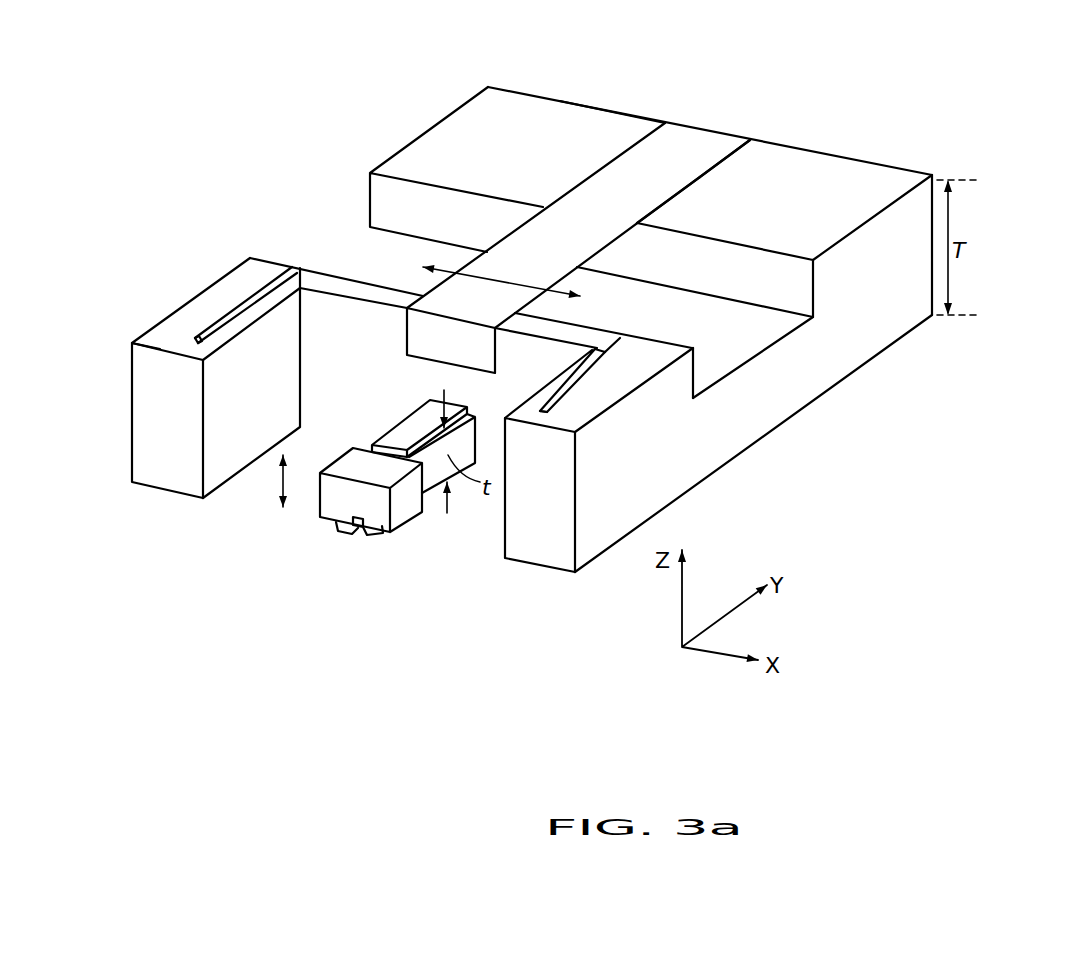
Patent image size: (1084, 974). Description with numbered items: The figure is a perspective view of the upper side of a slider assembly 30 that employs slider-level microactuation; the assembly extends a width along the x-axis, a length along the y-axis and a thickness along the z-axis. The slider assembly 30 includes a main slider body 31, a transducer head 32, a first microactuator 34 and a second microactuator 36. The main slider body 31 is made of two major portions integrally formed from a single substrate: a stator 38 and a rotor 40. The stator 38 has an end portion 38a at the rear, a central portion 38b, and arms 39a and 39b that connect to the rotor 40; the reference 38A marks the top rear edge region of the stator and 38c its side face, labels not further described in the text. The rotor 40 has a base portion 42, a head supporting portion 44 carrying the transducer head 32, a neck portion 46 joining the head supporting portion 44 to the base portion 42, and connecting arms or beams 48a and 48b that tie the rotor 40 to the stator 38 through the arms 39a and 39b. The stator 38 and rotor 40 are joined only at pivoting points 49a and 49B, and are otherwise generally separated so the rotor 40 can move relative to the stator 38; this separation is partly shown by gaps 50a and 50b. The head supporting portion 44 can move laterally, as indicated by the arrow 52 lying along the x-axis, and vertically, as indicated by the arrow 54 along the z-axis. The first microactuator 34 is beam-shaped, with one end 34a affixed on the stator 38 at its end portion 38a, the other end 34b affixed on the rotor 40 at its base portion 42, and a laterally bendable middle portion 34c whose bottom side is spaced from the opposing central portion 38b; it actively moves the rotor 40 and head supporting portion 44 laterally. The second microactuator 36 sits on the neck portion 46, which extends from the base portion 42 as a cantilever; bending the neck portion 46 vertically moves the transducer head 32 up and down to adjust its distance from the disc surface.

The slider assembly 30 is at (606, 76).
The main slider body 31 is at (549, 86).
The transducer head 32 is at (355, 528).
The first microactuator 34 is at (560, 228).
The end of first microactuator 34a is at (690, 133).
The end of first microactuator 34b is at (333, 282).
The middle portion of first microactuator 34c is at (595, 228).
The second microactuator 36 is at (397, 423).
The stator 38 is at (502, 103).
The top rear edge 38A is at (607, 113).
The end portion of stator 38a is at (767, 152).
The central portion of stator 38b is at (613, 295).
The side face 38c is at (667, 480).
The arm of stator 39a is at (173, 330).
The arm of stator 39b is at (670, 353).
The rotor 40 is at (300, 272).
The base portion of rotor 42 is at (343, 355).
The head supporting portion 44 is at (333, 492).
The neck portion 46 is at (467, 436).
The connecting arm 48a is at (250, 318).
The connecting arm 48b is at (550, 385).
The pivoting point 49a is at (203, 339).
The pivoting point 49B is at (553, 410).
The gap 50a is at (255, 297).
The gap 50b is at (597, 367).
The arrow 52 is at (501, 280).
The arrow 54 is at (270, 481).